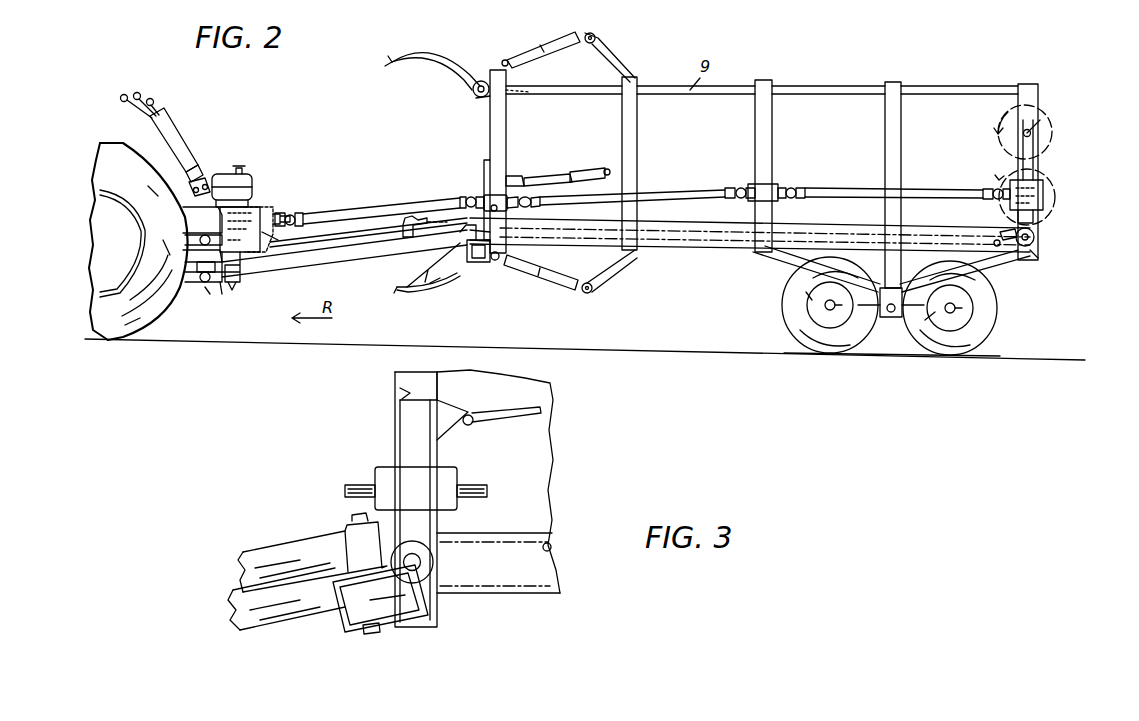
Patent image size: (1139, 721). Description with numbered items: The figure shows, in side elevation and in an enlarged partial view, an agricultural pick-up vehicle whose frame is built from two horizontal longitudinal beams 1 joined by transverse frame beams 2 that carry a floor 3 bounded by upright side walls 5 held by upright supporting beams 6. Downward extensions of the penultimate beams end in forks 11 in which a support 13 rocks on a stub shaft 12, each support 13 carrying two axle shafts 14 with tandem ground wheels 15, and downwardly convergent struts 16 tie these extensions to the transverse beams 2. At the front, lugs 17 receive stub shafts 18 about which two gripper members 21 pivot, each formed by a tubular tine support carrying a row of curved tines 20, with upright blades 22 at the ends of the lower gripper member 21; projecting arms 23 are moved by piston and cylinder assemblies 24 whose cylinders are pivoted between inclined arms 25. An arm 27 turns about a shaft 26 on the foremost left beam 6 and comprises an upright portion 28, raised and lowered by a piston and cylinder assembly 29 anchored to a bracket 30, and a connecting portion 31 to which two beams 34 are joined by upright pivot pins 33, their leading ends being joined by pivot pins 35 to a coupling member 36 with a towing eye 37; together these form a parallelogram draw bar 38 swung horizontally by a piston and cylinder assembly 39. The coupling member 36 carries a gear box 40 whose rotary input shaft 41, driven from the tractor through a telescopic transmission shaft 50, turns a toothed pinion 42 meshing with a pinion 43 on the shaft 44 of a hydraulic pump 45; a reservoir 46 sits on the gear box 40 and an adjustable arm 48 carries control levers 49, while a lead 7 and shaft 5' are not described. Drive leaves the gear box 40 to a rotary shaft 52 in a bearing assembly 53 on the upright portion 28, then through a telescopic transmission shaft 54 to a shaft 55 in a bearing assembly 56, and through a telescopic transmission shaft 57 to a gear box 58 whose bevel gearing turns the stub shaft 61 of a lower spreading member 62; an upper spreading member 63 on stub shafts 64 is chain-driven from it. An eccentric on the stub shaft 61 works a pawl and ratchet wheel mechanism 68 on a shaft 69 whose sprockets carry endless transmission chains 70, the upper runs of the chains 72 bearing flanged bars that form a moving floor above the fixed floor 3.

In FIG. 2, the longitudinal beam 1 is at (688, 243).
In FIG. 3, the longitudinal beam 1 is at (557, 588).
In FIG. 2, the transverse frame beam 2 is at (637, 252).
In FIG. 2, the floor 3 is at (705, 252).
In FIG. 2, the side wall 5 is at (762, 79).
In FIG. 3, the side wall 5 is at (507, 481).
In FIG. 2, the drive shaft 5' is at (379, 203).
In FIG. 2, the upright supporting beam 6 is at (506, 134).
In FIG. 3, the upright supporting beam 6 is at (426, 372).
In FIG. 2, the coupling 7 is at (292, 240).
In FIG. 2, the fork 11 is at (880, 330).
In FIG. 2, the stub shaft 12 is at (890, 345).
In FIG. 2, the support 13 is at (780, 310).
In FIG. 2, the axle shaft 14 is at (795, 338).
In FIG. 2, the ground wheel 15 is at (820, 354).
In FIG. 2, the strut 16 is at (782, 262).
In FIG. 2, the lug 17 is at (480, 100).
In FIG. 2, the stub shaft 18 is at (472, 93).
In FIG. 2, the tine 20 is at (436, 46).
In FIG. 2, the gripper member 21 is at (394, 293).
In FIG. 2, the upright blade 22 is at (432, 303).
In FIG. 2, the projecting arm 23 is at (492, 268).
In FIG. 2, the piston and cylinder assembly 24 is at (553, 30).
In FIG. 2, the inclined arm 25 is at (605, 45).
In FIG. 3, the shaft 26 is at (422, 561).
In FIG. 3, the arm 27 is at (397, 391).
In FIG. 2, the upright portion 28 is at (484, 168).
In FIG. 3, the upright portion 28 is at (400, 437).
In FIG. 2, the piston and cylinder assembly 29 is at (580, 172).
In FIG. 3, the piston and cylinder assembly 29 is at (505, 423).
In FIG. 2, the bracket 30 is at (607, 166).
In FIG. 3, the connecting portion 31 is at (400, 622).
In FIG. 2, the upright pivot pin 33 is at (478, 270).
In FIG. 3, the upright pivot pin 33 is at (364, 635).
In FIG. 2, the beam 34 is at (328, 266).
In FIG. 3, the beam 34 is at (232, 607).
In FIG. 2, the upright pivot pin 35 is at (236, 292).
In FIG. 2, the coupling member 36 is at (222, 297).
In FIG. 2, the towing eye 37 is at (208, 300).
In FIG. 2, the draw bar 38 is at (362, 244).
In FIG. 2, the piston and cylinder assembly 39 is at (403, 224).
In FIG. 3, the piston and cylinder assembly 39 is at (290, 545).
In FIG. 2, the gear box 40 is at (285, 210).
In FIG. 2, the rotary input shaft 41 is at (180, 248).
In FIG. 2, the toothed pinion 42 is at (268, 266).
In FIG. 2, the pinion 43 is at (265, 206).
In FIG. 2, the shaft 44 is at (185, 210).
In FIG. 2, the hydraulic pump 45 is at (262, 205).
In FIG. 2, the reservoir 46 is at (235, 166).
In FIG. 2, the arm 48 is at (175, 140).
In FIG. 2, the control lever 49 is at (157, 104).
In FIG. 2, the telescopic transmission shaft 50 is at (182, 236).
In FIG. 2, the rotary shaft 52 is at (478, 198).
In FIG. 3, the rotary shaft 52 is at (368, 478).
In FIG. 2, the bearing assembly 53 is at (482, 196).
In FIG. 3, the bearing assembly 53 is at (450, 470).
In FIG. 2, the telescopic transmission shaft 54 is at (688, 188).
In FIG. 2, the shaft 55 is at (742, 186).
In FIG. 2, the bearing assembly 56 is at (770, 184).
In FIG. 2, the telescopic transmission shaft 57 is at (850, 190).
In FIG. 2, the gear box 58 is at (1045, 186).
In FIG. 2, the stub shaft 61 is at (1045, 207).
In FIG. 2, the spreading member 62 is at (1040, 231).
In FIG. 2, the spreading member 63 is at (1057, 133).
In FIG. 2, the stub shaft 64 is at (1032, 128).
In FIG. 2, the pawl and ratchet wheel mechanism 68 is at (1034, 243).
In FIG. 2, the shaft 69 is at (1038, 257).
In FIG. 2, the endless transmission chain 70 is at (810, 228).
In FIG. 3, the endless transmission chain 70 is at (553, 550).
In FIG. 2, the chain 72 is at (918, 232).
In FIG. 3, the chain 72 is at (468, 535).